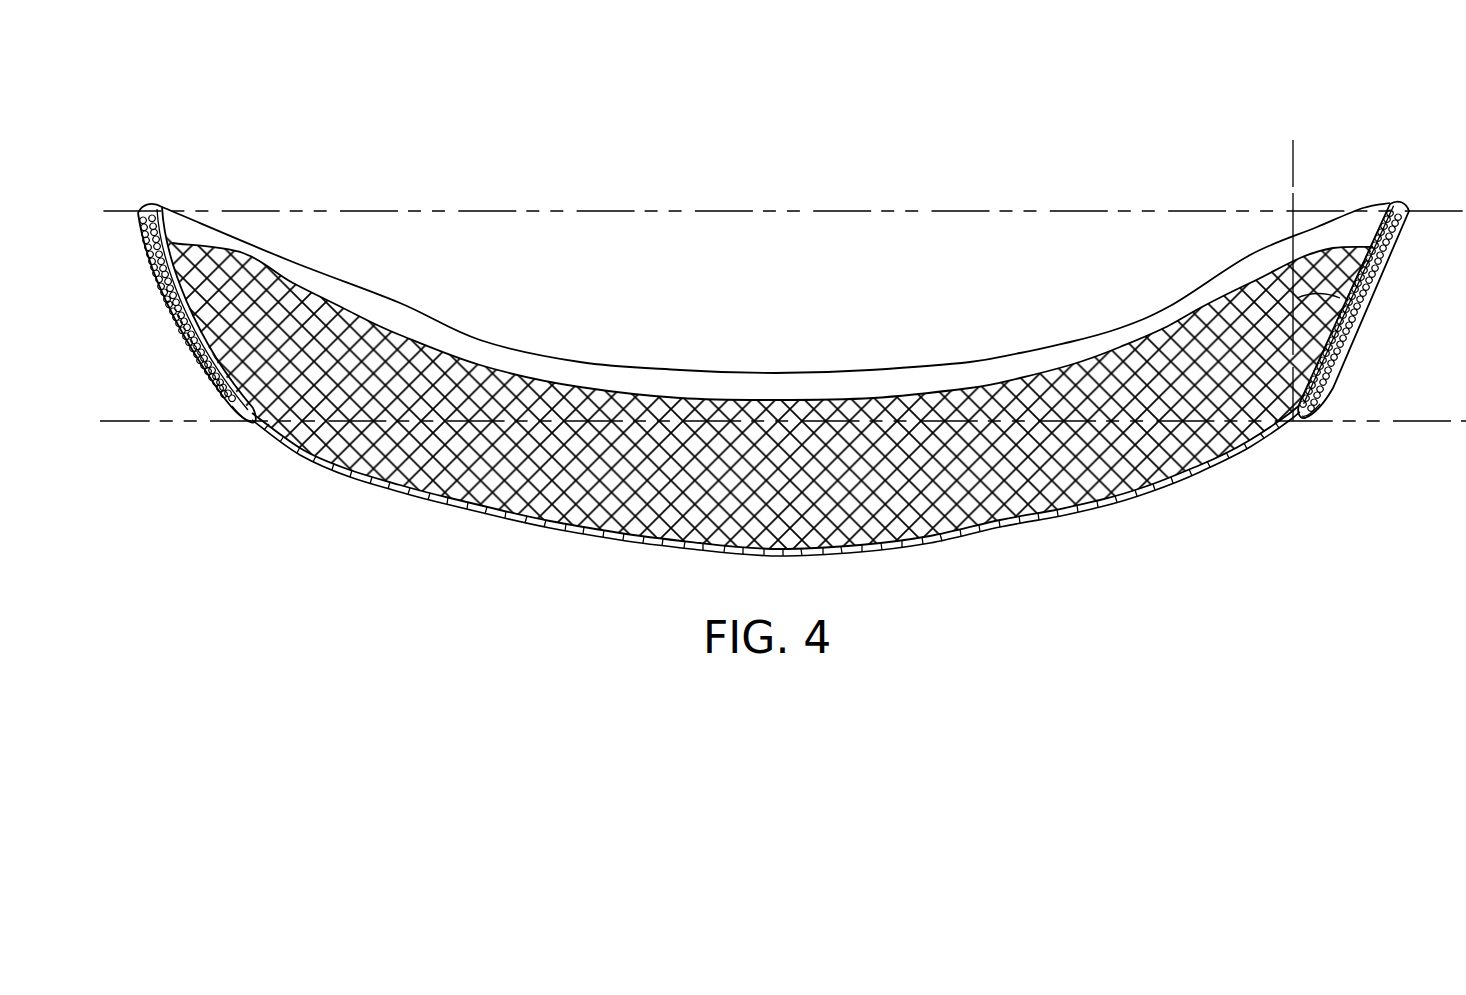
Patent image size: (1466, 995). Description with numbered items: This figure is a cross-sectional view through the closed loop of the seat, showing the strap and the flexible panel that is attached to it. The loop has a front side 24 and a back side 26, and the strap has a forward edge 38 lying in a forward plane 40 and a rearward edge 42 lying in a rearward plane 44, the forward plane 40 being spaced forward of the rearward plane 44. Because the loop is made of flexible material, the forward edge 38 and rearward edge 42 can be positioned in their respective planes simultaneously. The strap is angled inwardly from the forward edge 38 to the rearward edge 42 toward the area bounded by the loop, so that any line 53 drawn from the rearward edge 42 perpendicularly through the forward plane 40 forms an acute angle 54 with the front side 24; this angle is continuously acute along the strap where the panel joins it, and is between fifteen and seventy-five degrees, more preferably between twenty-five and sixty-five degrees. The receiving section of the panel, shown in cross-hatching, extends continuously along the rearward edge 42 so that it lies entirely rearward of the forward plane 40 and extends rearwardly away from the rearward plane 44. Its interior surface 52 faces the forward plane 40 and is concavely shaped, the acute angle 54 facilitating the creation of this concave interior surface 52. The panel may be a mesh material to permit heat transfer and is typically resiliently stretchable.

The front side 24 is at (190, 218).
The back side 26 is at (130, 281).
The forward edge 38 is at (143, 213).
The forward plane 40 is at (1443, 213).
The rearward edge 42 is at (258, 421).
The rearward plane 44 is at (1439, 421).
The interior surface 52 is at (957, 513).
The line 53 is at (1293, 140).
The acute angle 54 is at (1327, 293).